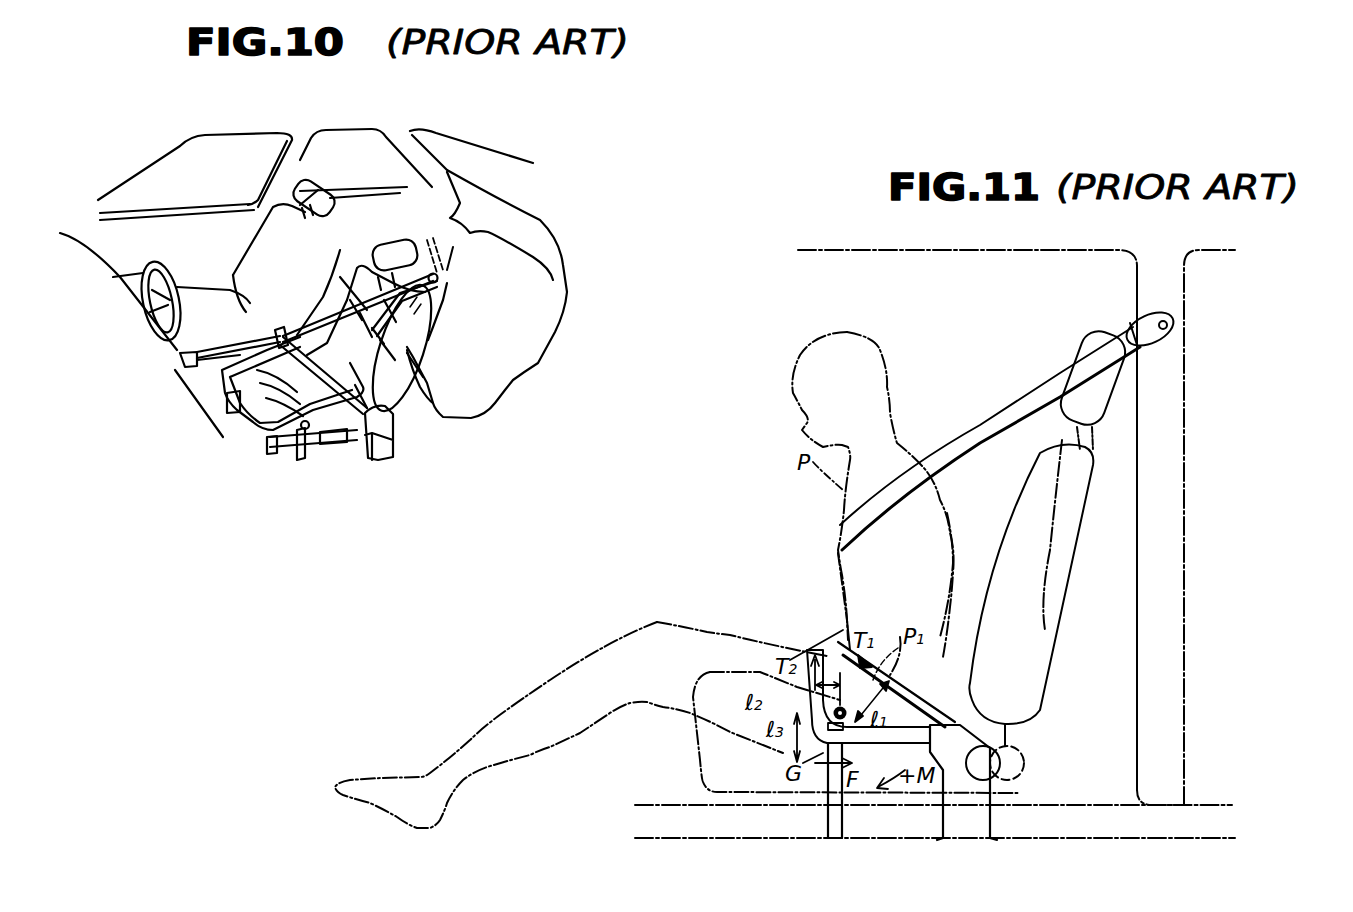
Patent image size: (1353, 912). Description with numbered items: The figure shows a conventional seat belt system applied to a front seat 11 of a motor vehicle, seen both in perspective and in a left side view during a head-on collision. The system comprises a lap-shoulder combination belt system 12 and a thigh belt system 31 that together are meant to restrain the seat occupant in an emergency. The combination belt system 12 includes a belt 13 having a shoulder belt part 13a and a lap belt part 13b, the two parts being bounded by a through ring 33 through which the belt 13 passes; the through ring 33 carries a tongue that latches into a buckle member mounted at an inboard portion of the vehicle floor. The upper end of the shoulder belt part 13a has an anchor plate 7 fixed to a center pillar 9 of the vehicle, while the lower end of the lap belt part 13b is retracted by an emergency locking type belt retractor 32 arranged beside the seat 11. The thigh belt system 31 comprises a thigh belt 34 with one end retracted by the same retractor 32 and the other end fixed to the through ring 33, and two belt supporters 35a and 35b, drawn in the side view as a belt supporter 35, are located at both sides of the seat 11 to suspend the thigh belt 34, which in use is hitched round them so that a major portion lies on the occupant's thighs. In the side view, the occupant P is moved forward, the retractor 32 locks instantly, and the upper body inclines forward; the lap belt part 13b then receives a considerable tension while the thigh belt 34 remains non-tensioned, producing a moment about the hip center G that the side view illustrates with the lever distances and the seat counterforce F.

In FIG. 10, the anchor plate 7 is at (445, 281).
In FIG. 11, the anchor plate 7 is at (1148, 313).
In FIG. 10, the center pillar 9 is at (437, 303).
In FIG. 11, the center pillar 9 is at (1137, 597).
In FIG. 10, the front seat 11 is at (477, 417).
In FIG. 11, the front seat 11 is at (703, 760).
In FIG. 10, the lap-shoulder combination belt system 12 is at (298, 323).
In FIG. 10, the belt 13 is at (333, 322).
In FIG. 10, the shoulder belt part 13a is at (428, 333).
In FIG. 11, the shoulder belt part 13a is at (838, 537).
In FIG. 10, the lap belt part 13b is at (370, 397).
In FIG. 11, the lap belt part 13b is at (848, 632).
In FIG. 10, the thigh belt system 31 is at (258, 432).
In FIG. 10, the emergency locking type belt retractor 32 is at (392, 440).
In FIG. 11, the emergency locking type belt retractor 32 is at (965, 818).
In FIG. 10, the through ring 33 is at (278, 338).
In FIG. 10, the thigh belt 34 is at (345, 435).
In FIG. 11, the thigh belt 34 is at (810, 650).
In FIG. 11, the pivoting arm 35 is at (840, 792).
In FIG. 10, the belt supporter 35a is at (298, 460).
In FIG. 10, the belt supporter 35b is at (180, 357).